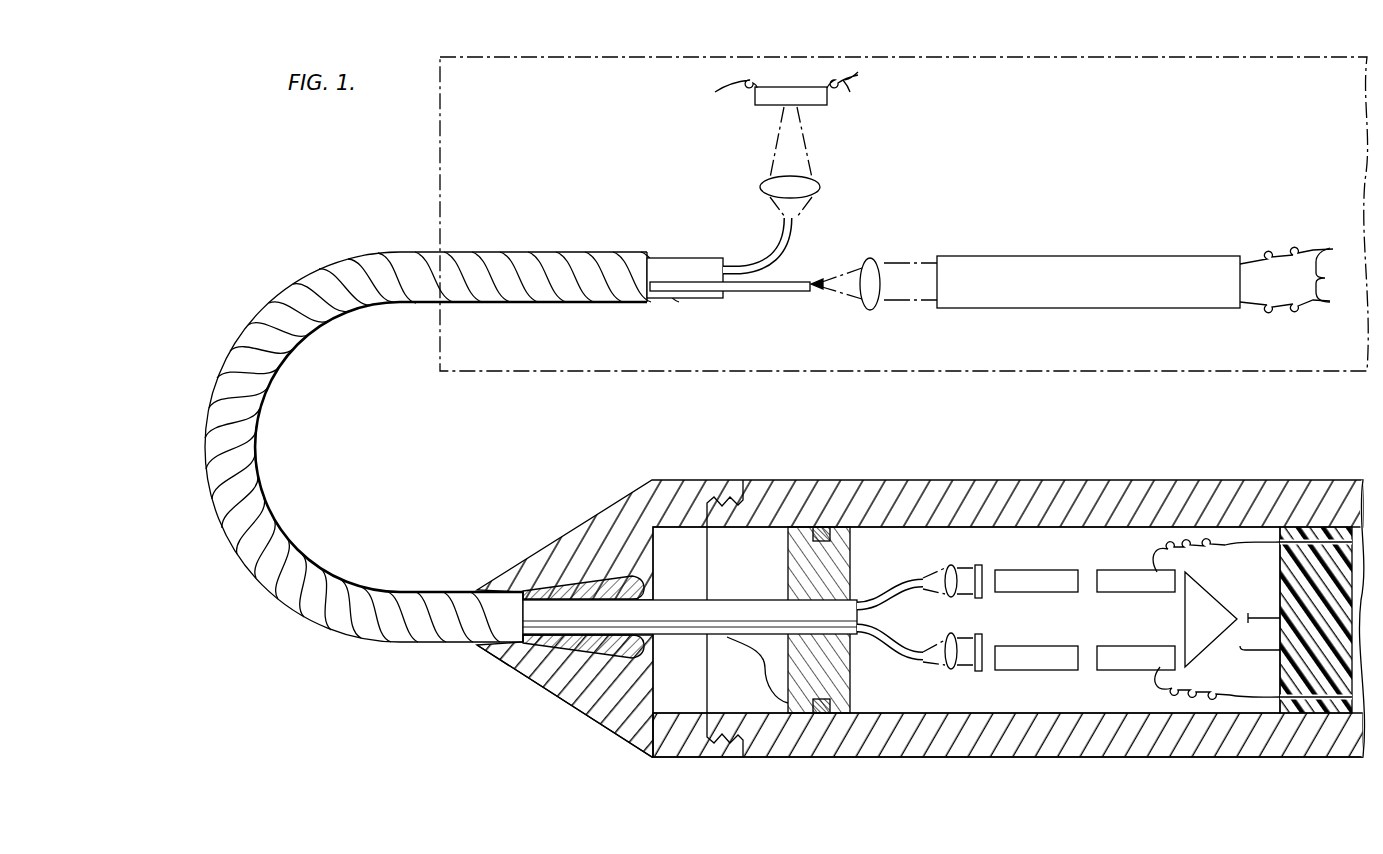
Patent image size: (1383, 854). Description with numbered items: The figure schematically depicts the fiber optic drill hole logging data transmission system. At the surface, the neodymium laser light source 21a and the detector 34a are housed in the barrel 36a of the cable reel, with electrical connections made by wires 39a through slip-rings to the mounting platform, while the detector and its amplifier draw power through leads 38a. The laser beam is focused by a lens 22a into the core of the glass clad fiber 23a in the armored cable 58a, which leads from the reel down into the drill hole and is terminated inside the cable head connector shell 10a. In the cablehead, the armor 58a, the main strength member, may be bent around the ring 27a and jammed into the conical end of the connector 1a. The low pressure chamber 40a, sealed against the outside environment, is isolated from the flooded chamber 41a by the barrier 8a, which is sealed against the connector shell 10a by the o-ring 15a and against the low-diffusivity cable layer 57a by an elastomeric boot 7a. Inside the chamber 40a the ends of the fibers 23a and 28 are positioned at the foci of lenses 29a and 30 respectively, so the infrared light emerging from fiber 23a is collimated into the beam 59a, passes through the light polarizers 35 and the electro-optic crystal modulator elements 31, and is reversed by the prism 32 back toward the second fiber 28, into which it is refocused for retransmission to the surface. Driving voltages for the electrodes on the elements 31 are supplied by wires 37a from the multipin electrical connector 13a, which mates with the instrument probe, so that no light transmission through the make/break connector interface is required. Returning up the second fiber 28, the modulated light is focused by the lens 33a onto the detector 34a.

The connector 1a is at (680, 743).
The elastomeric boot 7a is at (788, 537).
The barrier 8a is at (788, 664).
The cable head connector shell 10a is at (985, 758).
The multipin electrical connector 13a is at (1340, 622).
The o-ring 15a is at (825, 525).
The neodymium laser light source 21a is at (1083, 257).
The lens 22a is at (862, 317).
The glass clad fiber 23a is at (773, 292).
The ring 27a is at (638, 677).
The second fiber 28 is at (795, 240).
The lens 29a is at (948, 641).
The lens 30 is at (948, 567).
The light modulator 31 is at (1040, 592).
The prism 32 is at (1214, 630).
The lens 33a is at (812, 184).
The detector 34a is at (765, 100).
The light polarizers 35 is at (992, 614).
The barrel 36a is at (434, 190).
The wires 37a is at (1220, 550).
The leads 38a is at (785, 92).
The wires 39a is at (1305, 279).
The low pressure chamber 40a is at (903, 697).
The flooded chamber 41a is at (748, 690).
The low-diffusivity cable layer 57a is at (685, 258).
The armored cable 58a is at (470, 297).
The beam 59a is at (970, 668).